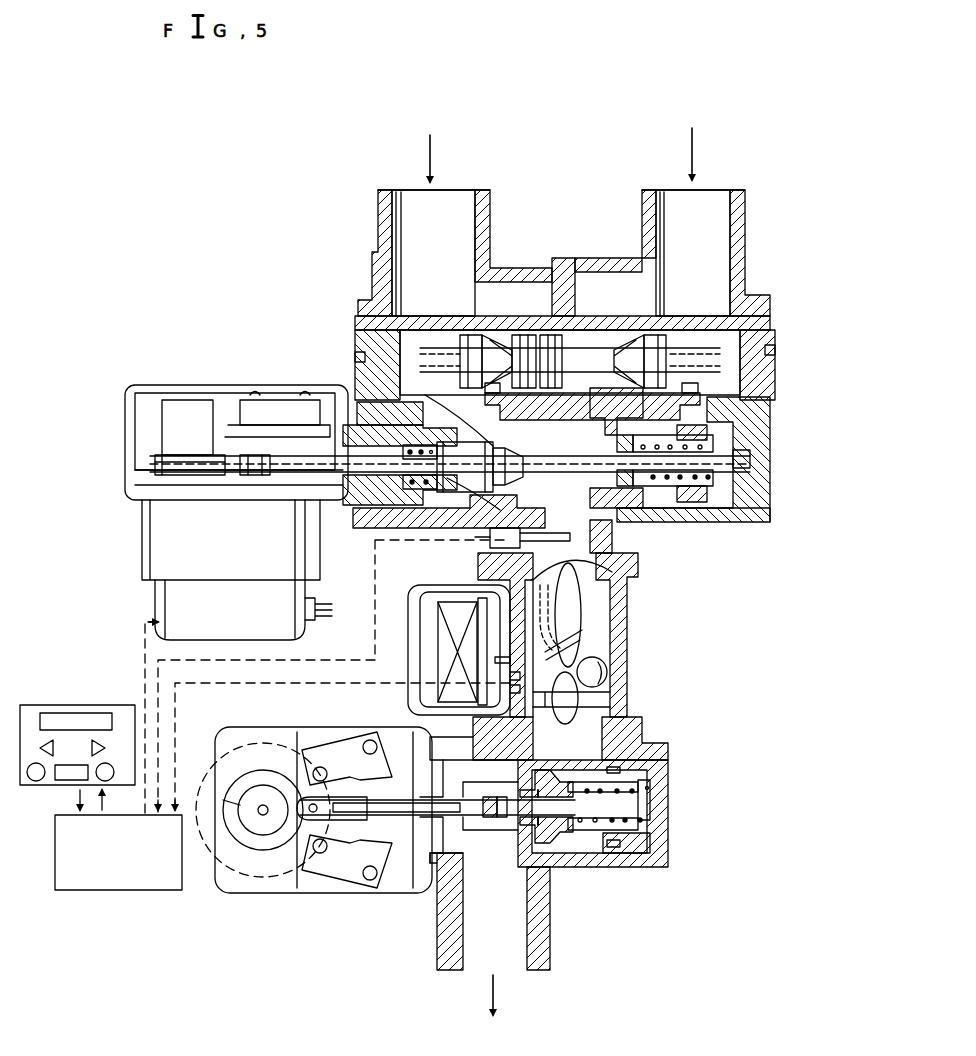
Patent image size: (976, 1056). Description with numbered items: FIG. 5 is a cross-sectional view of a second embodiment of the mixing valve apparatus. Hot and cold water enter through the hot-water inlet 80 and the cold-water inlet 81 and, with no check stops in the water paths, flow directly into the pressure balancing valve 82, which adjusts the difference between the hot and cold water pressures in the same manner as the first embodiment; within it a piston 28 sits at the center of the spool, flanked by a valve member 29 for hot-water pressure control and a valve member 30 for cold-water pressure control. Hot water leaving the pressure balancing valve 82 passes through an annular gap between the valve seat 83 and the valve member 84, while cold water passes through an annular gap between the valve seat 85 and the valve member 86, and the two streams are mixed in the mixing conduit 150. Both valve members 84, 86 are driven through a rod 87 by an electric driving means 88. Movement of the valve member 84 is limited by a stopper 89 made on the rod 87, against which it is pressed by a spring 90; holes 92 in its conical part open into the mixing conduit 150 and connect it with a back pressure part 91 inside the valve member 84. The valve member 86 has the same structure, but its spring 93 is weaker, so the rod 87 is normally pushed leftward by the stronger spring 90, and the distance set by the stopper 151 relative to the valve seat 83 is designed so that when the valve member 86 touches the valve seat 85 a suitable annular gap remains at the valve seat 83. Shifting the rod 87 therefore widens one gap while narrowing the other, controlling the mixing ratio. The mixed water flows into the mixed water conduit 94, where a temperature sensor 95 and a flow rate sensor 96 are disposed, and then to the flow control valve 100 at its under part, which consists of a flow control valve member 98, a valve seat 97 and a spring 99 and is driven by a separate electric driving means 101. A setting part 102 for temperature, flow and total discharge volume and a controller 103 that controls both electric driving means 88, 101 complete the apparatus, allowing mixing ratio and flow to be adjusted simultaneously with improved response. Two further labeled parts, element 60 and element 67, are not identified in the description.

The piston 28 is at (567, 325).
The valve member for hot-water pressure control 29 is at (478, 300).
The valve member for cold-water pressure control 30 is at (655, 325).
The flow control valve ball 60 is at (630, 680).
The temperature setting dial 67 is at (38, 780).
The hot-water inlet 80 is at (705, 200).
The cold-water inlet 81 is at (399, 212).
The pressure balancing valve 82 is at (735, 335).
The valve seat 83 is at (645, 448).
The valve member 84 is at (672, 490).
The valve seat 85 is at (492, 508).
The valve member 86 is at (360, 352).
The rod 87 is at (718, 464).
The electric driving means 88 is at (142, 572).
The stopper 89 is at (612, 480).
The spring 90 is at (712, 450).
The back pressure part 91 is at (748, 495).
The holes 92 is at (647, 486).
The spring 93 is at (410, 485).
The mixed water conduit 94 is at (628, 660).
The temperature sensor 95 is at (630, 583).
The flow rate sensor 96 is at (645, 722).
The valve seat 97 is at (553, 858).
The flow control valve member 98 is at (595, 852).
The spring 99 is at (655, 790).
The flow control valve 100 is at (670, 858).
The electric driving means for the flow control valve 101 is at (258, 893).
The setting part 102 is at (70, 705).
The controller 103 is at (118, 892).
The mixing conduit 150 is at (608, 325).
The stopper 151 is at (535, 325).